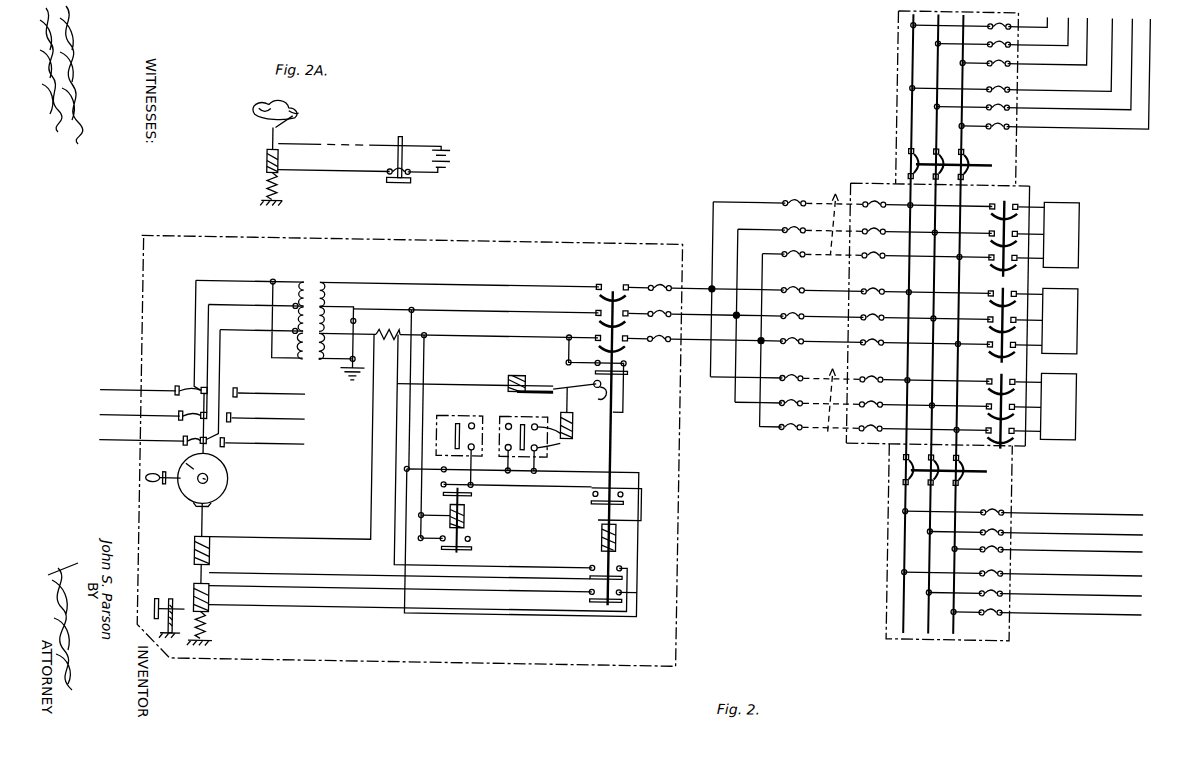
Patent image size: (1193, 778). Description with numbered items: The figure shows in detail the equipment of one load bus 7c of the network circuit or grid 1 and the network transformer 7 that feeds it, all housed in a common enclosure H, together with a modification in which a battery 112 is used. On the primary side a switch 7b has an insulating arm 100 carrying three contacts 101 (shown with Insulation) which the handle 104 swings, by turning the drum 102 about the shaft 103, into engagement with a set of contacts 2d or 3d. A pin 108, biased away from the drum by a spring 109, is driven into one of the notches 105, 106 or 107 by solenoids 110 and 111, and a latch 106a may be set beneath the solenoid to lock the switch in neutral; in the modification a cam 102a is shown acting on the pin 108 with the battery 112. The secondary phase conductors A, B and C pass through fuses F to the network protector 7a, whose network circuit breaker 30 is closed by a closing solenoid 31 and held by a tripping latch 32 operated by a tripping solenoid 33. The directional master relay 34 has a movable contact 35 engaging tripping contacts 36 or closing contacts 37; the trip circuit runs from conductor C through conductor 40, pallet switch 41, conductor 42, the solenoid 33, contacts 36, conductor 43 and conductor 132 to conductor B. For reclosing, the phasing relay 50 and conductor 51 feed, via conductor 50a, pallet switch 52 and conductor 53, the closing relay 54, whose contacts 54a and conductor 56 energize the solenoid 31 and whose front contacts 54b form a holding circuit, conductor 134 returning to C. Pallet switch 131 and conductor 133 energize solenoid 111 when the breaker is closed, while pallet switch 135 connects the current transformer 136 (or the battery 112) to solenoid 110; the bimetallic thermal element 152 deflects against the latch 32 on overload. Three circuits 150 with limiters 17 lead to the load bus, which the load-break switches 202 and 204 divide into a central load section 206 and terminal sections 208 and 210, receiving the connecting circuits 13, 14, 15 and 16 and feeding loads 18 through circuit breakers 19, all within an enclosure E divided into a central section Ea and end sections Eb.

In FIG. 2, the network circuit or grid 1 is at (1173, 103).
In FIG. 2, the set of contacts 2d is at (176, 395).
In FIG. 2, the set of contacts 3d is at (237, 397).
In FIG. 2, the transformer 7 is at (280, 318).
In FIG. 2, the network protector 7a is at (440, 644).
In FIG. 2, the switch 7b is at (216, 480).
In FIG. 2, the load bus 7c is at (916, 622).
In FIG. 2, the connecting circuit 13 is at (1065, 62).
In FIG. 2, the connecting circuit 14 is at (1140, 123).
In FIG. 2, the connecting circuit 15 is at (1145, 606).
In FIG. 2, the connecting circuit 16 is at (1145, 543).
In FIG. 2, the limiters 17 is at (795, 198).
In FIG. 2, the loads 18 is at (1076, 224).
In FIG. 2, the automatic circuit breaker 19 is at (961, 324).
In FIG. 2, the network circuit breaker 30 is at (518, 476).
In FIG. 2, the closing motor or solenoid 31 is at (618, 538).
In FIG. 2, the tripping latch 32 is at (570, 383).
In FIG. 2, the tripping solenoid 33 is at (573, 426).
In FIG. 2, the directional master relay 34 is at (483, 410).
In FIG. 2, the movable contact 35 is at (570, 446).
In FIG. 2, the tripping contacts 36 is at (569, 444).
In FIG. 2, the closing contacts 37 is at (517, 393).
In FIG. 2, the conductor 40 is at (566, 349).
In FIG. 2, the pallet switch 41 is at (615, 391).
In FIG. 2, the conductor 42 is at (627, 400).
In FIG. 2, the conductor 43 is at (573, 465).
In FIG. 2, the phasing relay 50 is at (448, 418).
In FIG. 2, the conductor 50a is at (582, 486).
In FIG. 2, the conductor 51 is at (503, 466).
In FIG. 2, the pallet switch 52 is at (642, 501).
In FIG. 2, the conductor 53 is at (565, 511).
In FIG. 2, the closing relay 54 is at (466, 518).
In FIG. 2, the contacts 54a is at (474, 552).
In FIG. 2, the front contacts 54b is at (473, 497).
In FIG. 2, the conductor 56 is at (524, 544).
In FIG. 2, the arm 100 is at (210, 463).
In FIG. 2, the contacts 101 is at (200, 446).
In FIG. 2, the drum 102 is at (221, 500).
In FIG. 2A, the cam 102a is at (253, 108).
In FIG. 2, the shaft 103 is at (187, 471).
In FIG. 2, the handle 104 is at (178, 489).
In FIG. 2A, the notch 105 is at (250, 114).
In FIG. 2, the notch 105 is at (195, 507).
In FIG. 2A, the notch 106 is at (285, 128).
In FIG. 2, the notch 106 is at (200, 515).
In FIG. 2, the latch 106a is at (162, 611).
In FIG. 2A, the notch 107 is at (291, 115).
In FIG. 2, the notch 107 is at (217, 513).
In FIG. 2A, the pin 108 is at (266, 138).
In FIG. 2, the pin 108 is at (201, 538).
In FIG. 2A, the spring 109 is at (264, 197).
In FIG. 2, the spring 109 is at (209, 640).
In FIG. 2A, the solenoid 110 is at (263, 171).
In FIG. 2, the solenoid 110 is at (212, 559).
In FIG. 2, the solenoid 111 is at (212, 605).
In FIG. 2A, the battery 112 is at (448, 159).
In FIG. 2, the pallet switch 131 is at (593, 603).
In FIG. 2, the conductor 132 is at (410, 350).
In FIG. 2, the conductor 133 is at (553, 616).
In FIG. 2, the conductor 134 is at (423, 371).
In FIG. 2A, the pallet switch 135 is at (396, 186).
In FIG. 2, the pallet switch 135 is at (595, 567).
In FIG. 2, the current transformer 136 is at (400, 330).
In FIG. 2, the circuits 150 is at (829, 305).
In FIG. 2, the bimetallic thermal element 152 is at (521, 379).
In FIG. 2, the load-break switch 202 is at (950, 472).
In FIG. 2, the load-break switch 204 is at (957, 159).
In FIG. 2, the central load section 206 is at (899, 194).
In FIG. 2, the terminal section 208 is at (960, 621).
In FIG. 2, the terminal section 210 is at (907, 58).
In FIG. 2, the phase line A is at (488, 285).
In FIG. 2, the phase conductor B is at (488, 310).
In FIG. 2, the phase conductor C is at (488, 337).
In FIG. 2, the enclosure E is at (940, 665).
In FIG. 2, the central section Ea is at (847, 447).
In FIG. 2, the end section Eb is at (892, 93).
In FIG. 2, the fuses F is at (664, 286).
In FIG. 2, the common enclosure H is at (578, 244).
In FIG. 2, the insulation Insulation is at (212, 437).